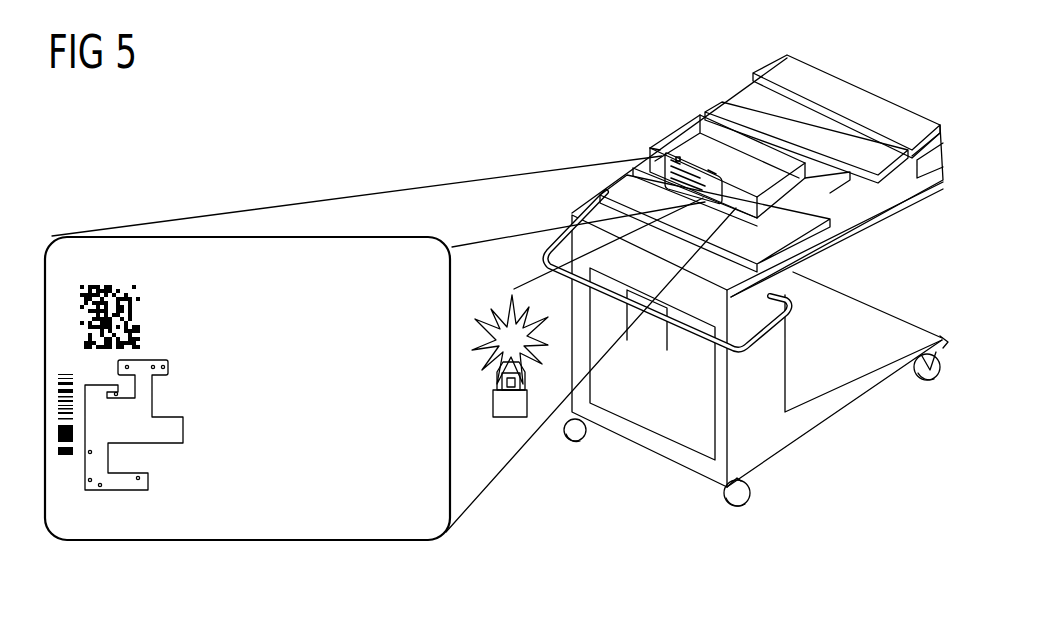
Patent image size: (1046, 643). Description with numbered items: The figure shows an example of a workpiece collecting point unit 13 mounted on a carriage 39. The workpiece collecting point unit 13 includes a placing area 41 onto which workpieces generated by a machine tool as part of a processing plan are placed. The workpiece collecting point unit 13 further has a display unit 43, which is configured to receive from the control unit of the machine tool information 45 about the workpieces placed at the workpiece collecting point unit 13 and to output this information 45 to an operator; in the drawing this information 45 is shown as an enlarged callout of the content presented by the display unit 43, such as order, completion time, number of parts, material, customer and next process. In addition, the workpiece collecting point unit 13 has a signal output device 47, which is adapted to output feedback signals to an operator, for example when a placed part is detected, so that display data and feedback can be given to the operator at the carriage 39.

The workpiece collecting point unit 13 is at (748, 166).
The carriage 39 is at (882, 279).
The placing area 41 is at (753, 180).
The display unit 43 is at (847, 228).
The information 45 is at (116, 526).
The signal output device 47 is at (512, 444).